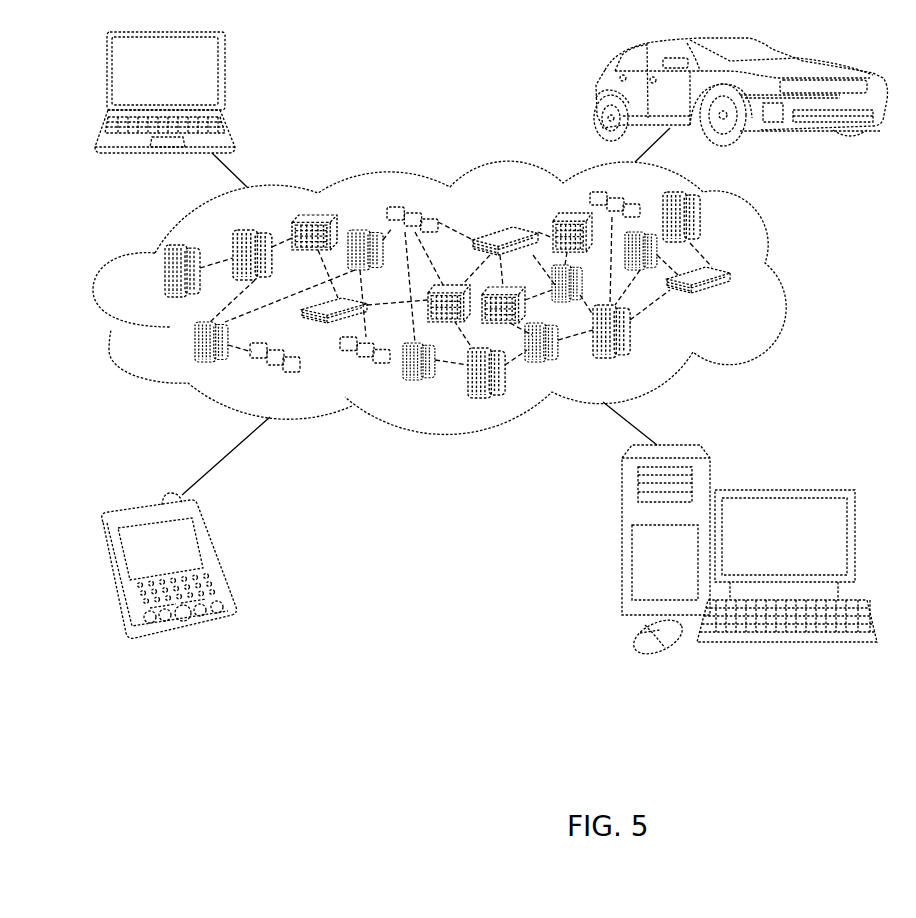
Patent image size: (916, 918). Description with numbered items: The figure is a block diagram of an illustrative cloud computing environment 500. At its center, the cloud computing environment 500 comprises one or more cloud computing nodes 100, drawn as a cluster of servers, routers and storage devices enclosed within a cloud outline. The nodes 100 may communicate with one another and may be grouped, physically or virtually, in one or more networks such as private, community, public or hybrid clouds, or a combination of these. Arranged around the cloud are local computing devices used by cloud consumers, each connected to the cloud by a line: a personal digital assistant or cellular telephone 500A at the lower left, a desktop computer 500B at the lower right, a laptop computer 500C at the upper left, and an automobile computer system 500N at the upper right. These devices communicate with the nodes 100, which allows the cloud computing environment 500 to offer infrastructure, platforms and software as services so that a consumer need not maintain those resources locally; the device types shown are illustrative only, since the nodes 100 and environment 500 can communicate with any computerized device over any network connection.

The cloud computing environment 500 is at (783, 278).
The cloud computing nodes 100 is at (743, 305).
The personal digital assistant (PDA) or cellular telephone 500A is at (213, 558).
The desktop computer 500B is at (782, 490).
The laptop computer 500C is at (224, 78).
The automobile computer system 500N is at (598, 90).